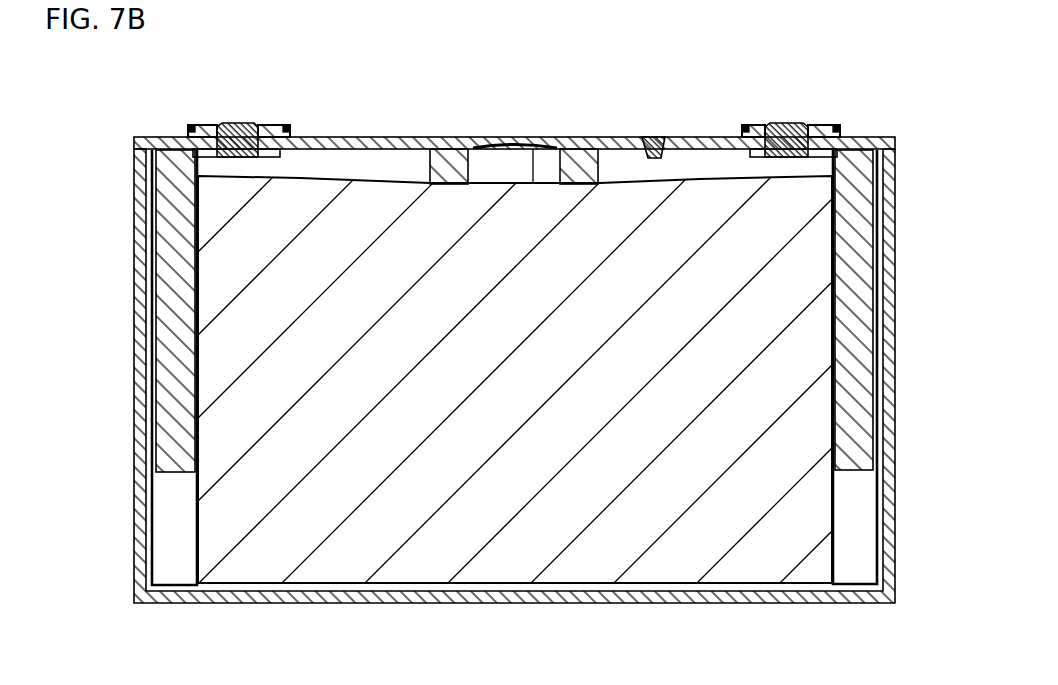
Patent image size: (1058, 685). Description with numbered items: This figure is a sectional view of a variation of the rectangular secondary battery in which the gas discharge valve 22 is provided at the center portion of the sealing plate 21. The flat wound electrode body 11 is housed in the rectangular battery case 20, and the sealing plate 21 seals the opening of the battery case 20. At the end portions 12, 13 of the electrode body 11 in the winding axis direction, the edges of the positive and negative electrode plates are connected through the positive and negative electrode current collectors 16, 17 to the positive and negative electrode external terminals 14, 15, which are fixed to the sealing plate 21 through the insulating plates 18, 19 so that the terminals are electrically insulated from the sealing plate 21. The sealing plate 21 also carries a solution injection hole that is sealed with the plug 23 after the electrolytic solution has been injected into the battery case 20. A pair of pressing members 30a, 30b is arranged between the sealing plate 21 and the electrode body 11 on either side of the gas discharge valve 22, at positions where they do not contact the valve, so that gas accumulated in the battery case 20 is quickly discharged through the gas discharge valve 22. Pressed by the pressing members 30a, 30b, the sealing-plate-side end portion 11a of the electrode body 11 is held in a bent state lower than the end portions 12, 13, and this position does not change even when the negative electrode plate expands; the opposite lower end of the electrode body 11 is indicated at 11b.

The electrode body 11 is at (633, 505).
The end portion of the electrode body 11a is at (537, 140).
The lower end of electrode body 11b is at (385, 586).
The end portion of the electrode body 12 is at (172, 532).
The end portion of the electrode body 13 is at (852, 536).
The positive electrode external terminal 14 is at (237, 124).
The negative electrode external terminal 15 is at (788, 122).
The positive electrode current collector 16 is at (168, 335).
The negative electrode current collector 17 is at (853, 287).
The insulating plate 18 is at (205, 127).
The insulating plate 19 is at (825, 127).
The battery case 20 is at (897, 208).
The sealing plate 21 is at (350, 137).
The gas discharge valve 22 is at (497, 146).
The plug 23 is at (653, 137).
The pressing member 30a is at (455, 162).
The pressing member 30b is at (578, 162).